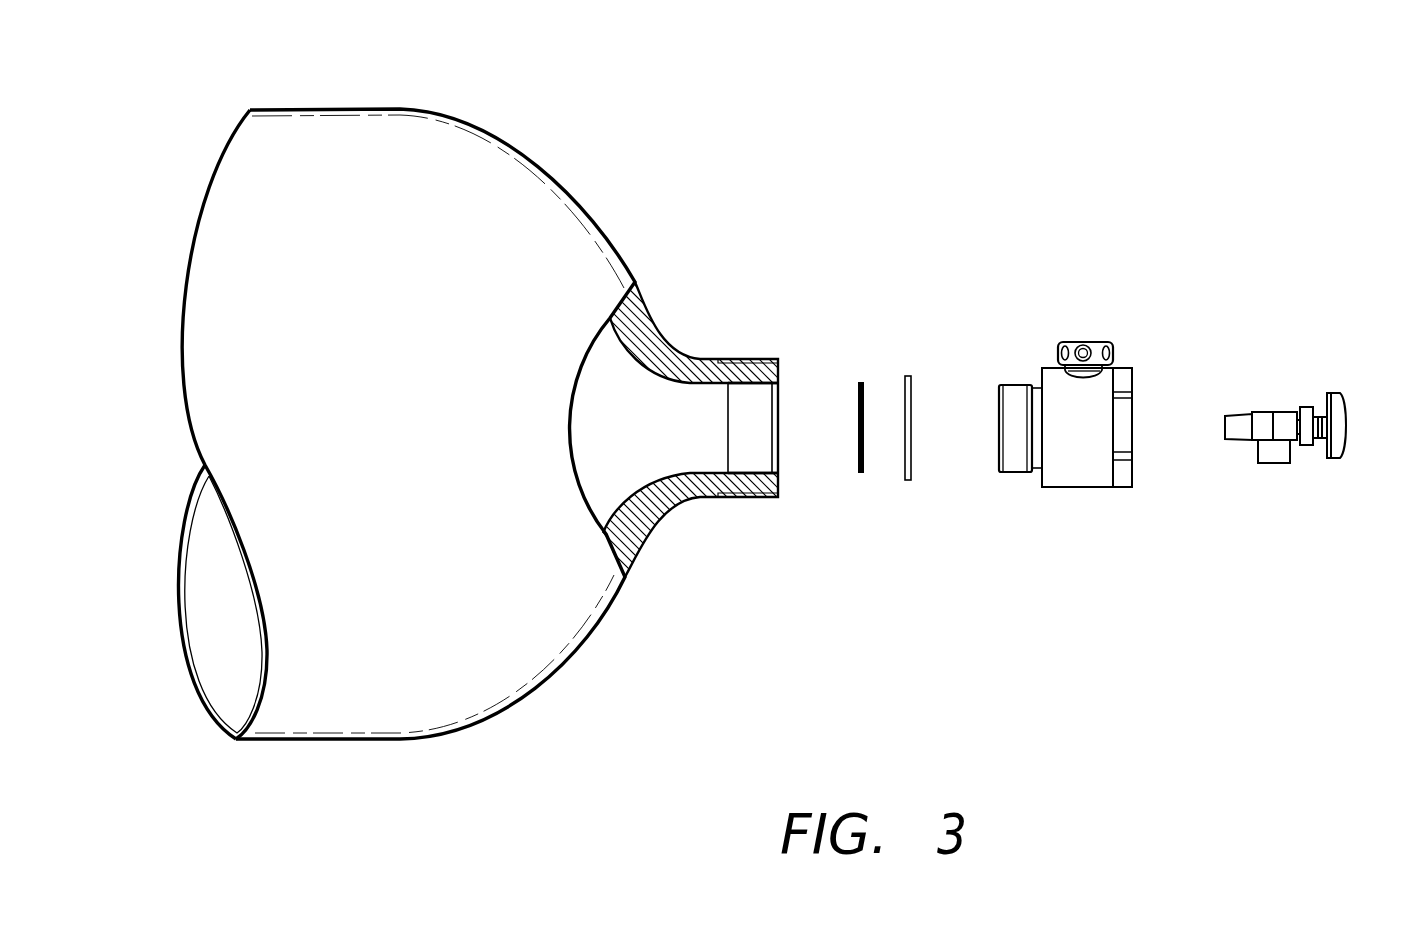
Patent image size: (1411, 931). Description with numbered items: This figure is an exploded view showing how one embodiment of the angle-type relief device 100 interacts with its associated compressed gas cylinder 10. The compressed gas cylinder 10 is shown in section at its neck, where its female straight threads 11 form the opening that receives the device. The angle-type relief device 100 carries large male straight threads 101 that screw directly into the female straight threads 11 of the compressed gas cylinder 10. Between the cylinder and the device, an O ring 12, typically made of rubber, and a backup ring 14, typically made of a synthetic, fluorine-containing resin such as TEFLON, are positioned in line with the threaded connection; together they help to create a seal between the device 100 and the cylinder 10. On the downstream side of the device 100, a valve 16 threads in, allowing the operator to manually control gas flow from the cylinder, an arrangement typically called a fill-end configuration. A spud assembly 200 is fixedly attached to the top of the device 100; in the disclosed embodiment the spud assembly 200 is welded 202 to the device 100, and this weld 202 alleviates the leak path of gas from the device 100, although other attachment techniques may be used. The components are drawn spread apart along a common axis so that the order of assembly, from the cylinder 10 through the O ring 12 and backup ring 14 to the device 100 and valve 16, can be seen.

The compressed gas cylinder 10 is at (343, 108).
The female straight threads 11 is at (747, 383).
The O ring 12 is at (860, 477).
The backup ring 14 is at (908, 482).
The angle-type relief device 100 is at (1183, 258).
The large male straight threads 101 is at (1017, 380).
The spud assembly 200 is at (1088, 342).
The weld 202 is at (1107, 367).
The valve 16 is at (1312, 408).